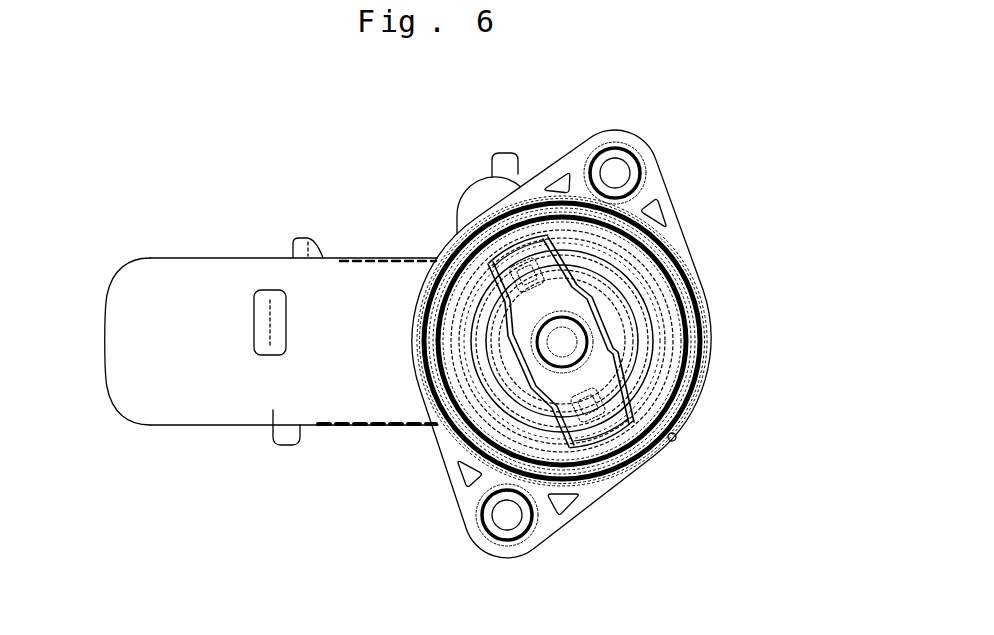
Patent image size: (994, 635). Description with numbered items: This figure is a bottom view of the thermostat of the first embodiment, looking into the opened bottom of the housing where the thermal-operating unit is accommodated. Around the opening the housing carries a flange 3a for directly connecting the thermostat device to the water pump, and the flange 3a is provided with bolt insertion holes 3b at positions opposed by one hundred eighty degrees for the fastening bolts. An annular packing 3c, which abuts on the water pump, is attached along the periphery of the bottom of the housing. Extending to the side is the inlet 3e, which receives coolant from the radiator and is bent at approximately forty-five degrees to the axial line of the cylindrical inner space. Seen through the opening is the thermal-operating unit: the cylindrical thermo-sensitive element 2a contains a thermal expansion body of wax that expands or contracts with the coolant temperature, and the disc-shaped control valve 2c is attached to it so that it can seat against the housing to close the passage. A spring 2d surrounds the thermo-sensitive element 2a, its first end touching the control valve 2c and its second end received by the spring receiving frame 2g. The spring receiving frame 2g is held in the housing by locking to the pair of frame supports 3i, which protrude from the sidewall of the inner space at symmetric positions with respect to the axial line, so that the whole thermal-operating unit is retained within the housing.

The inlet 3e is at (104, 326).
The bolt insertion holes 3b is at (611, 168).
The flange 3a is at (654, 165).
The frame supports 3i is at (517, 245).
The annular packing 3c is at (702, 335).
The thermo-sensitive element 2a is at (680, 379).
The control valve 2c is at (660, 308).
The spring 2d is at (500, 412).
The spring receiving frame 2g is at (588, 316).